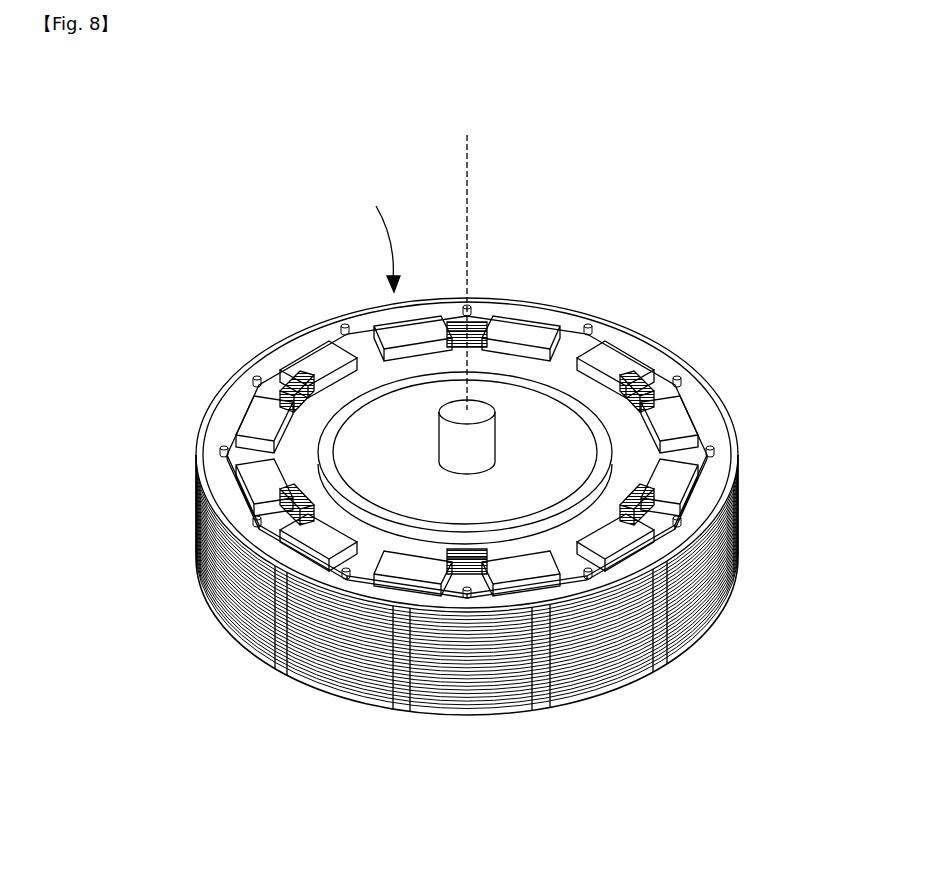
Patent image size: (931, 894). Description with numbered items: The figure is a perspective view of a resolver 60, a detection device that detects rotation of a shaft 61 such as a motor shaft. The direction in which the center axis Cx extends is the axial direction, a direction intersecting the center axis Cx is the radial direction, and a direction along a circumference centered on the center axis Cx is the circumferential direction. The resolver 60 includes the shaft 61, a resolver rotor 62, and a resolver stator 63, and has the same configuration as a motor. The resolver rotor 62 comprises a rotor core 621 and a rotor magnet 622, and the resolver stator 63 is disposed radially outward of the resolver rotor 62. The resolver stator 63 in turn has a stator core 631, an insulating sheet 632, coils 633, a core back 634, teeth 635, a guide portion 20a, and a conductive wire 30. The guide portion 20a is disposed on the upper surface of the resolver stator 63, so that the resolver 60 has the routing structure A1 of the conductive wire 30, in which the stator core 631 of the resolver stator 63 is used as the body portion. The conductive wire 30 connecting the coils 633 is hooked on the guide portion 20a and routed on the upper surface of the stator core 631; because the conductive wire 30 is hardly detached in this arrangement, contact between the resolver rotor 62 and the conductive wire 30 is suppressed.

The resolver 60 is at (277, 208).
The resolver stator 63 is at (219, 383).
The shaft 61 is at (706, 598).
The resolver rotor 62 is at (466, 558).
The rotor core 621 is at (600, 517).
The rotor magnet 622 is at (518, 493).
The stator core 631 is at (205, 549).
The insulating sheet 632 is at (222, 484).
The coil 633 is at (655, 420).
The core back 634 is at (718, 510).
The teeth 635 is at (697, 478).
The conductive wire 30 is at (371, 328).
The guide portion 20a is at (463, 306).
The center axis Cx is at (470, 162).
The routing structure A1 is at (381, 235).